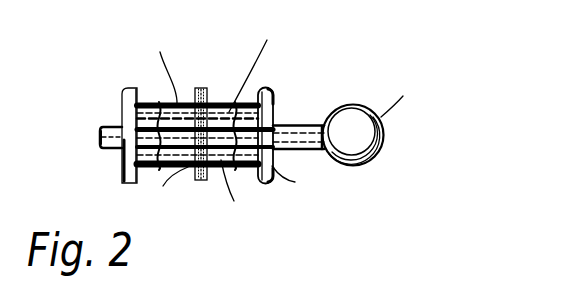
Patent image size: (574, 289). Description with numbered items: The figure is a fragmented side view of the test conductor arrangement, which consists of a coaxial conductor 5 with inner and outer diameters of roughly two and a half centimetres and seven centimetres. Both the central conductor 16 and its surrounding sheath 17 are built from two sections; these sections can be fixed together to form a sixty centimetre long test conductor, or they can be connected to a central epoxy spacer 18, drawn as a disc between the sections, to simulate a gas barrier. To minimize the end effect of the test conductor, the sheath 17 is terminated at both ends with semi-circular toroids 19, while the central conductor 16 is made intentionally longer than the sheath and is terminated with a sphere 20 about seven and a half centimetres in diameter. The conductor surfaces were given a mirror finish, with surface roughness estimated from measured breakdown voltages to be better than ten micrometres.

The coaxial conductor 5 is at (213, 70).
The central conductor 16 is at (294, 125).
The sheath 17 is at (145, 152).
The central epoxy spacer 18 is at (273, 158).
The semi-circular toroids 19 is at (121, 104).
The sphere 20 is at (372, 147).